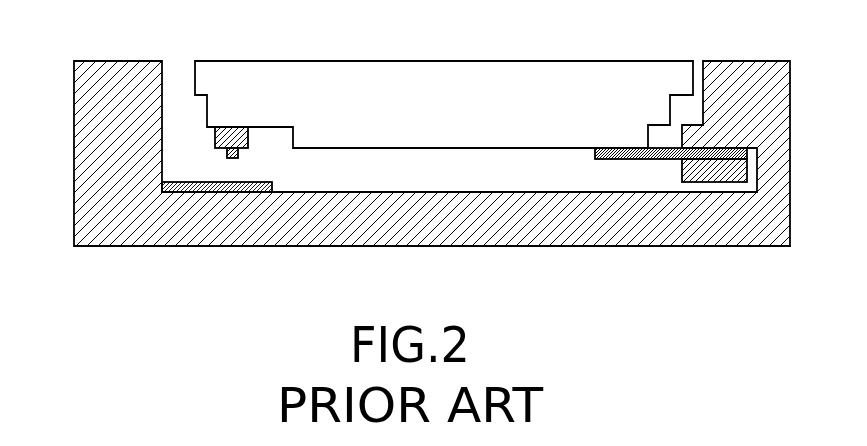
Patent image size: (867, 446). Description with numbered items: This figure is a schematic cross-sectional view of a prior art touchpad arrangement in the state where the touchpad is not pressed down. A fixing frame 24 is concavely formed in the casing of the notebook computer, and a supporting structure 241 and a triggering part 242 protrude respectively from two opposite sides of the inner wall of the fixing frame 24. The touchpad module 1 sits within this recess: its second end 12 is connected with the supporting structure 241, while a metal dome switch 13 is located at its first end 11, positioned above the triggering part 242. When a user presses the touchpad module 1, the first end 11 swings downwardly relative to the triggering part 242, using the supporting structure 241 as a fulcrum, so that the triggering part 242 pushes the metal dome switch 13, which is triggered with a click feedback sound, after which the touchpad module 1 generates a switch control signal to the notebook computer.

The touchpad module 1 is at (483, 65).
The first end 11 is at (232, 115).
The second end 12 is at (620, 138).
The metal dome switch 13 is at (242, 136).
The fixing frame 24 is at (104, 74).
The supporting structure 241 is at (610, 148).
The triggering part 242 is at (223, 185).